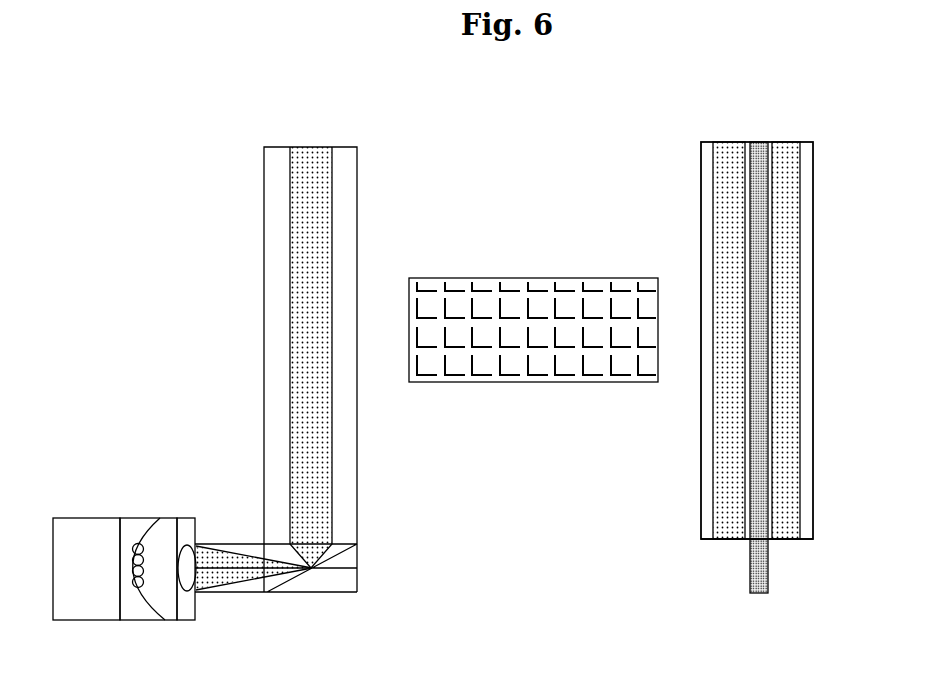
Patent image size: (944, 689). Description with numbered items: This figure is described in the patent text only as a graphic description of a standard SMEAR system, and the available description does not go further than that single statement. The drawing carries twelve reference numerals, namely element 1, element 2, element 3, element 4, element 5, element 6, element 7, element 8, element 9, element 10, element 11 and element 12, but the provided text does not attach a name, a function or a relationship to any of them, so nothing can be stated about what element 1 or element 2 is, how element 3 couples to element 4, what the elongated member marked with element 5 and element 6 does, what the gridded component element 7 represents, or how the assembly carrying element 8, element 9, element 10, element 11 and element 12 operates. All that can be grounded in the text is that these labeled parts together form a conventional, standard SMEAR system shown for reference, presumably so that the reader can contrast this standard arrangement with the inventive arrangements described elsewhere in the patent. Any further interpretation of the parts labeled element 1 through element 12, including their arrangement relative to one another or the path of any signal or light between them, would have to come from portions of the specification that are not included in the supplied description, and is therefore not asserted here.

The light source housing 1 is at (73, 522).
The lamp with reflector 2 is at (135, 522).
The lens 3 is at (194, 546).
The light coupling element 4 is at (357, 553).
The light guide core 5 is at (322, 148).
The light guide cladding 6 is at (348, 183).
The grid / microlens array 7 is at (515, 278).
The panel housing 8 is at (812, 235).
The central electrode band 9 is at (766, 577).
The panel bottom edge 10 is at (750, 540).
The right light-guiding layer 11 is at (805, 165).
The left light-guiding layer 12 is at (717, 172).